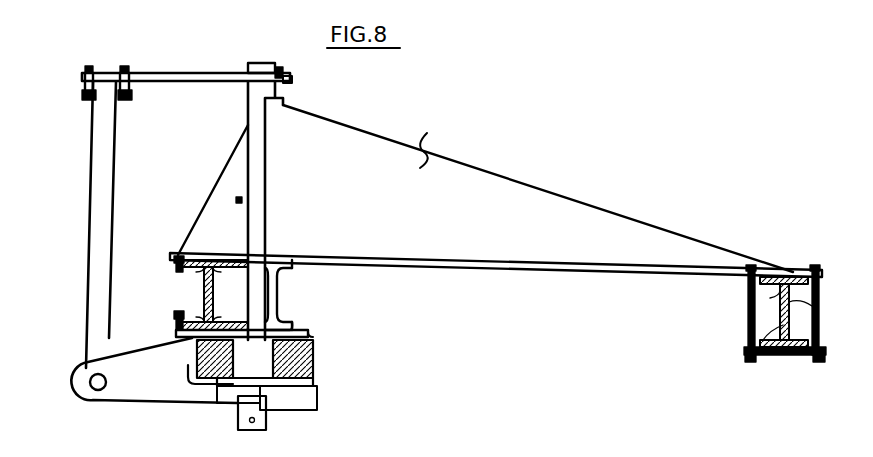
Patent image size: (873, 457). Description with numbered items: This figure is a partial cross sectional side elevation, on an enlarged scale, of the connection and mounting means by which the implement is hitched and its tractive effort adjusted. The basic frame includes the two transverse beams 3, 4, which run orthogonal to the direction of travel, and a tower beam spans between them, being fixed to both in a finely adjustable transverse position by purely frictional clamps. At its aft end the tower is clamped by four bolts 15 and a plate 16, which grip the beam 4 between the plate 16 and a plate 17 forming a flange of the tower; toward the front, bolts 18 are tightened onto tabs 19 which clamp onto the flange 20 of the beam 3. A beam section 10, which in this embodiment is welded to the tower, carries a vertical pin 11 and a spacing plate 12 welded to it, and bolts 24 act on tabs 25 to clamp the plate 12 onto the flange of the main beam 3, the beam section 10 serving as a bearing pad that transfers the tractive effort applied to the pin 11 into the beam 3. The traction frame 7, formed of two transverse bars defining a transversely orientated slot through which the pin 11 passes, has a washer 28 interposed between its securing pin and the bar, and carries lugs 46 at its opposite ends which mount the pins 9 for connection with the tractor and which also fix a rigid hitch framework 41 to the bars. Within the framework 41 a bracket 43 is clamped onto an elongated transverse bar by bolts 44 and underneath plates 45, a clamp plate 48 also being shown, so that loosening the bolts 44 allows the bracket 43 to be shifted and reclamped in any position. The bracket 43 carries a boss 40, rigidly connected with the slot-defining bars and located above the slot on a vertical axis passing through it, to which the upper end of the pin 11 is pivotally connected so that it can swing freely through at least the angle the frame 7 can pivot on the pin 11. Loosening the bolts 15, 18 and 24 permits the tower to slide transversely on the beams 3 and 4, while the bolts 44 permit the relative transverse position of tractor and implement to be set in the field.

The transverse beam 3 is at (203, 292).
The transverse beam 4 is at (757, 357).
The traction frame 7 is at (217, 378).
The pin 9 is at (89, 383).
The beam section 10 is at (277, 290).
The pin 11 is at (252, 133).
The spacing plate 12 is at (177, 336).
The bolt 15 is at (782, 307).
The plate 16 is at (793, 356).
The plate 17 is at (472, 268).
The bolt 18 is at (180, 255).
The tab 19 is at (174, 265).
The flange 20 is at (197, 259).
The bolt 24 is at (175, 316).
The tab 25 is at (176, 325).
The washer 28 is at (285, 400).
The boss 40 is at (258, 67).
The hitch framework 41 is at (108, 165).
The bracket 43 is at (155, 73).
The bolt 44 is at (83, 93).
The underneath plate 45 is at (130, 98).
The lug 46 is at (137, 384).
The clamp plate 48 is at (313, 338).